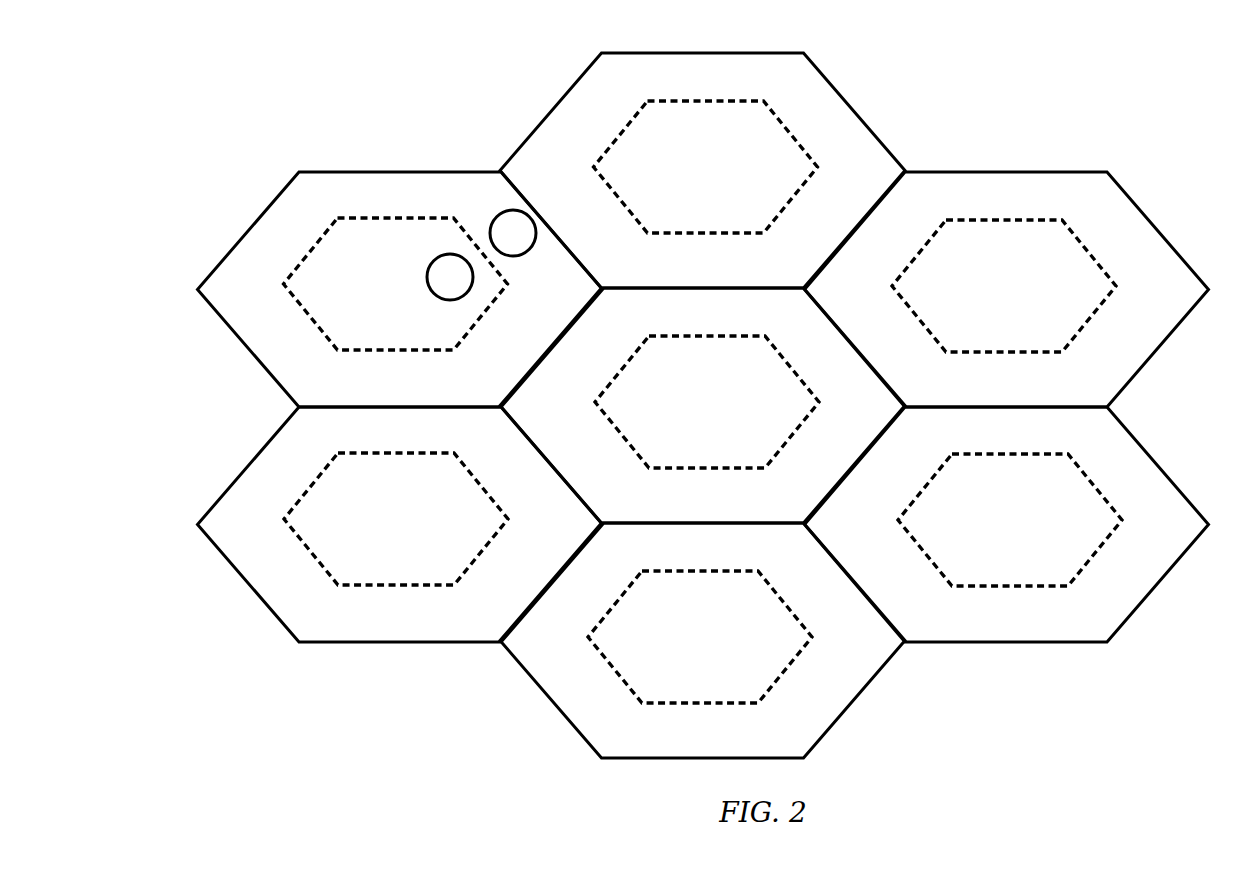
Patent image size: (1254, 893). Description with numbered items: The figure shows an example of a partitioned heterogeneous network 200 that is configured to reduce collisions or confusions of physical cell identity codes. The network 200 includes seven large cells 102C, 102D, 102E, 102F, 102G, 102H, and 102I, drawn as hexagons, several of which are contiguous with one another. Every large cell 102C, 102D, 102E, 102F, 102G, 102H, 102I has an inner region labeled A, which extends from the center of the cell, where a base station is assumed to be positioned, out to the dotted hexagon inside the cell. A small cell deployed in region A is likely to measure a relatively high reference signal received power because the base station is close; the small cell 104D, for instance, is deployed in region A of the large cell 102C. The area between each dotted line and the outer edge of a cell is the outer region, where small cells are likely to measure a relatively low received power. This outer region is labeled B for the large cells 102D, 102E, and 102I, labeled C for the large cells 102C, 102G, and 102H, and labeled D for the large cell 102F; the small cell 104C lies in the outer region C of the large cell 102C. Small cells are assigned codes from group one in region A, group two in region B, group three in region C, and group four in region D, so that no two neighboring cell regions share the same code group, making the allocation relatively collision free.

The network 200 is at (186, 109).
The large cell 102C is at (400, 284).
The large cell 102D is at (288, 459).
The large cell 102E is at (590, 101).
The large cell 102F is at (580, 374).
The large cell 102G is at (572, 604).
The large cell 102H is at (878, 261).
The large cell 102I is at (877, 501).
The small cell 104C is at (505, 224).
The small cell 104D is at (443, 266).